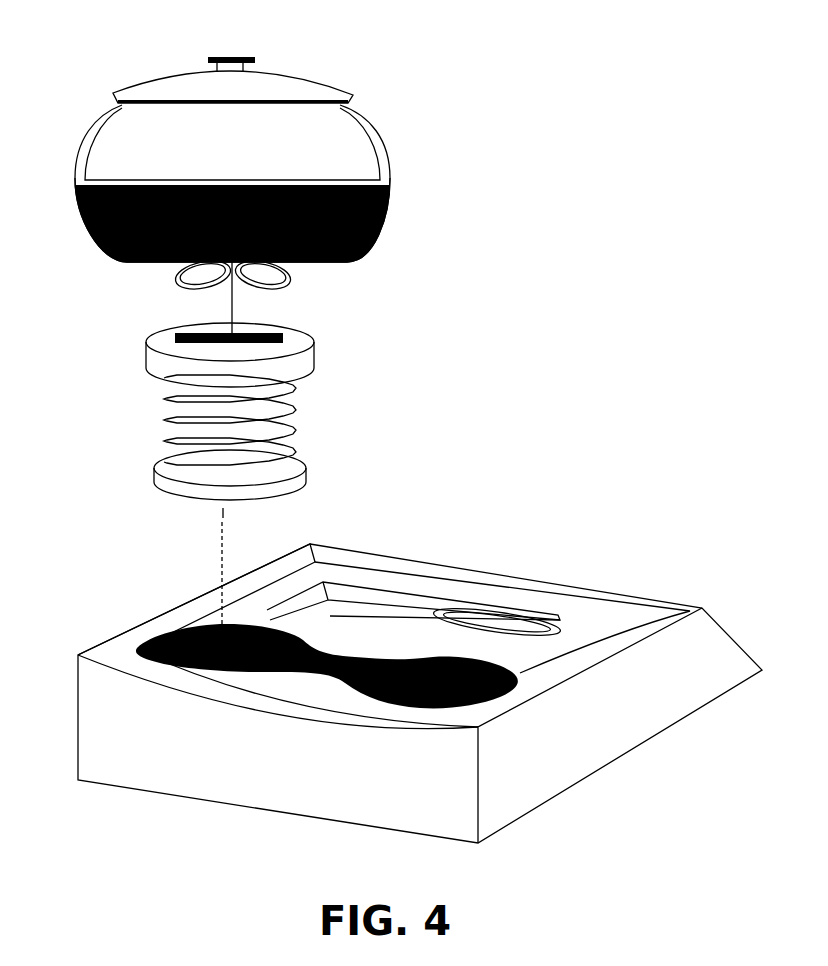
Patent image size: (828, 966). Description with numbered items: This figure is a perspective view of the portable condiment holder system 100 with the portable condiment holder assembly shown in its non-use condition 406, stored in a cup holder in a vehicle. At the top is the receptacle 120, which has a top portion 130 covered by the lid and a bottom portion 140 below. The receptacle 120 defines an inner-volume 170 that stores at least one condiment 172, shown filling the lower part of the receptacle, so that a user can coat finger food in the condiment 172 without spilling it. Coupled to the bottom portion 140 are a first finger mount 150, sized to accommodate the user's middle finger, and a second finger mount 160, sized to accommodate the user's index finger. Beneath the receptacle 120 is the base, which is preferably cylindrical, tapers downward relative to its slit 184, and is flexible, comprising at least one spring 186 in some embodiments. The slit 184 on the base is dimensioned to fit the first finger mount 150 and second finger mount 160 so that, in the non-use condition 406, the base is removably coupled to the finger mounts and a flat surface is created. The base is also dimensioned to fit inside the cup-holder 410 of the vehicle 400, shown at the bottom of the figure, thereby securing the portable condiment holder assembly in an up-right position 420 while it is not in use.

The portable condiment holder system 100 is at (490, 201).
The receptacle 120 is at (92, 118).
The top portion 130 is at (100, 163).
The bottom portion 140 is at (138, 82).
The first finger mount 150 is at (172, 283).
The second finger mount 160 is at (296, 283).
The inner-volume 170 is at (244, 150).
The condiment 172 is at (362, 218).
The slit 184 is at (285, 334).
The spring 186 is at (307, 408).
The vehicle 400 is at (650, 582).
The non-use condition 406 is at (487, 350).
The cup-holder 410 is at (160, 620).
The up-right position 420 is at (124, 423).